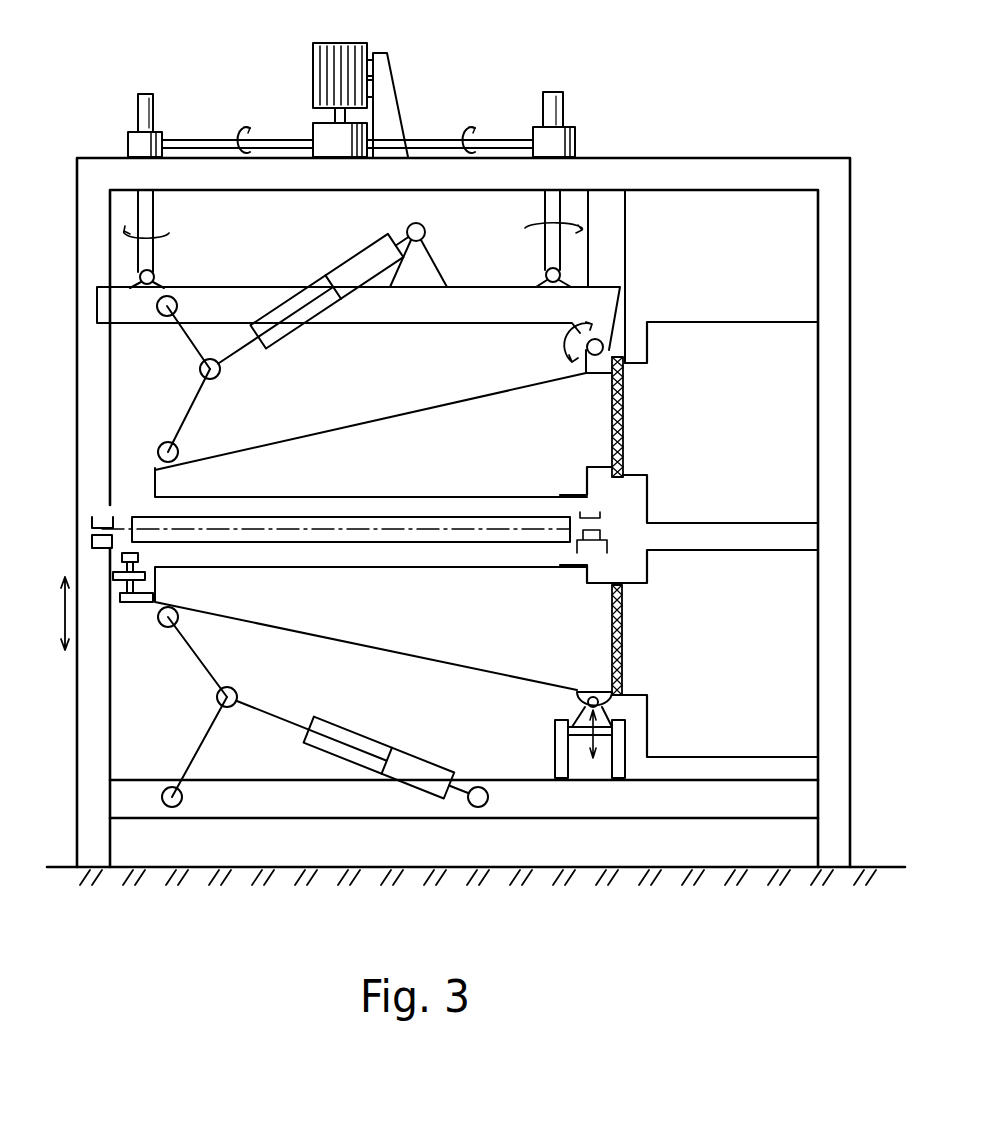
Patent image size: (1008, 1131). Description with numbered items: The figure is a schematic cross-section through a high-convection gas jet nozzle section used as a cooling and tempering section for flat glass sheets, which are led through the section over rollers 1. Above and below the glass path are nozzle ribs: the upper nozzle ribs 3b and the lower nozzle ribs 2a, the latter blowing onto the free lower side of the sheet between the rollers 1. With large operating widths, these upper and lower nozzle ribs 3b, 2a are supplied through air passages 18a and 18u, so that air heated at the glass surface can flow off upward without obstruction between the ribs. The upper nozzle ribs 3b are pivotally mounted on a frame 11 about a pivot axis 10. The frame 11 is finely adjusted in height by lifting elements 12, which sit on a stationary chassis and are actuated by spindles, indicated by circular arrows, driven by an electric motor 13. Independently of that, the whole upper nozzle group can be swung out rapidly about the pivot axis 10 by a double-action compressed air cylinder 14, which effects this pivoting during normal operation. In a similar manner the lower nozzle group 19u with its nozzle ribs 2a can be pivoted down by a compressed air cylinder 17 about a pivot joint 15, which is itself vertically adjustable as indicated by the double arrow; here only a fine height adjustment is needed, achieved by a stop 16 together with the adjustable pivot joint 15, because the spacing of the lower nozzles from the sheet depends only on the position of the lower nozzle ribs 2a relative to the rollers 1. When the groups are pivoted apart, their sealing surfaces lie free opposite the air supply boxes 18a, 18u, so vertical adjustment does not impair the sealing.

The rollers 1 is at (404, 520).
The lower nozzle ribs 2a is at (282, 613).
The upper nozzle ribs 3b is at (157, 485).
The pivot axis 10 is at (572, 350).
The frame 11 is at (487, 290).
The lifting elements 12 is at (153, 98).
The electric motor 13 is at (335, 43).
The compressed air cylinder 14 is at (290, 308).
The pivot joint 15 is at (610, 740).
The stop 16 is at (127, 558).
The compressed air cylinder 17 is at (350, 753).
The air passage 18a is at (800, 418).
The air passage 18u is at (792, 720).
The lower nozzle group 19u is at (622, 616).